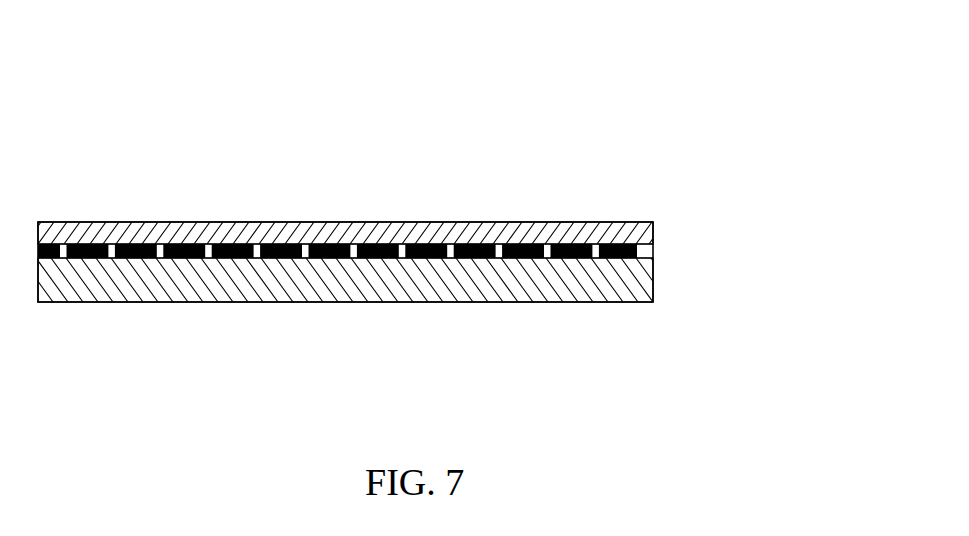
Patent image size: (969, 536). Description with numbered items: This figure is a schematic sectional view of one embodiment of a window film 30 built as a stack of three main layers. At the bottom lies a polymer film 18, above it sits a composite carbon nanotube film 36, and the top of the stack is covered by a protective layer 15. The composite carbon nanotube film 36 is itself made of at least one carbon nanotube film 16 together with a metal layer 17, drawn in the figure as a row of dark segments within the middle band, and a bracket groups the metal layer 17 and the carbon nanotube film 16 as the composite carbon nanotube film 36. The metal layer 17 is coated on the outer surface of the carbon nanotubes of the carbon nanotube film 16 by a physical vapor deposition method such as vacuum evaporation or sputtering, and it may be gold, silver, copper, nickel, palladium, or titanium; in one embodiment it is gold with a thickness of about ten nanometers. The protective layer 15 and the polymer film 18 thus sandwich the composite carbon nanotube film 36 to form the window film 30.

The window film 30 is at (396, 166).
The protective layer 15 is at (653, 222).
The carbon nanotube film 16 is at (643, 254).
The metal layer 17 is at (645, 242).
The polymer film 18 is at (645, 277).
The composite carbon nanotube film 36 is at (412, 244).